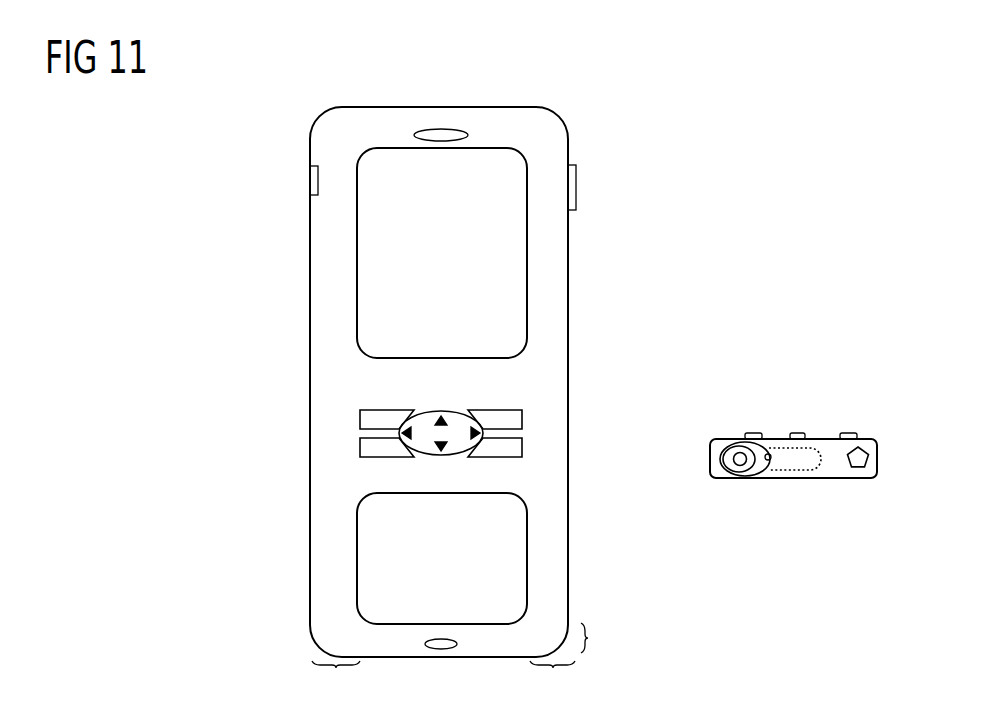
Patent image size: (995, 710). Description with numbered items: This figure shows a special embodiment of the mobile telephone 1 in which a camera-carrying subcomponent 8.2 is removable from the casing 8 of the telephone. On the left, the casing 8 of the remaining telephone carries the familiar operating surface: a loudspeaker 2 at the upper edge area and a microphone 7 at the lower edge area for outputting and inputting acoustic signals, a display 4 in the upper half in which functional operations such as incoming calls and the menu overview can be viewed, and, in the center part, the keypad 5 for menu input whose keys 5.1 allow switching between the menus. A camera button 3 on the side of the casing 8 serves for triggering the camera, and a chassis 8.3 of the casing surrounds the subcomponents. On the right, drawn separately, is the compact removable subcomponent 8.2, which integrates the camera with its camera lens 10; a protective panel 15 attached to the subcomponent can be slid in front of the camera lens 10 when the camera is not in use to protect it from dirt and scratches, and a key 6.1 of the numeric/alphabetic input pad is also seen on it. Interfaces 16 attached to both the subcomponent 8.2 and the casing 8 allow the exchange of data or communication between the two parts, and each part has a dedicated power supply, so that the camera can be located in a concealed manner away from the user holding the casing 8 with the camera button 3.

The mobile telephone 1 is at (590, 76).
The loudspeaker 2 is at (440, 134).
The camera button 3 is at (577, 188).
The display of the mobile telephone 4 is at (434, 266).
The keypad for menu input 5 is at (544, 400).
The key of the menu input keypad 5.1 is at (512, 444).
The key of the numeric/alphabetic input pad 6.1 is at (797, 435).
The microphone 7 is at (438, 649).
The casing of the mobile telephone 8 is at (557, 238).
The removable and swivelable subcomponent of the casing 8.2 is at (805, 371).
The chassis of the casing 8.3 is at (470, 662).
The camera lens 10 is at (741, 468).
The protective panel for camera lens 15 is at (789, 465).
The interface 16 is at (310, 183).